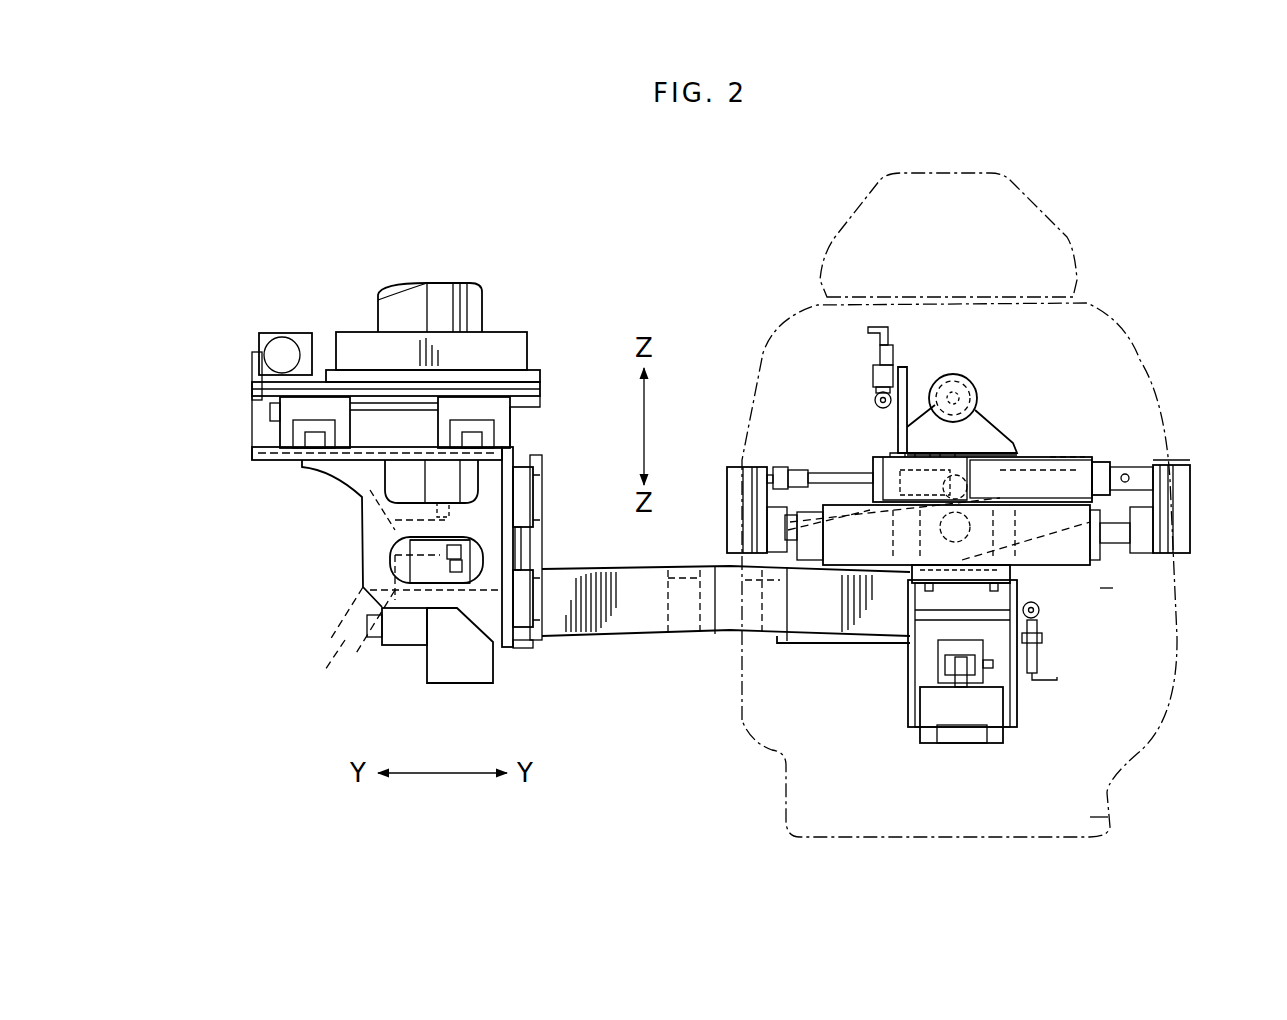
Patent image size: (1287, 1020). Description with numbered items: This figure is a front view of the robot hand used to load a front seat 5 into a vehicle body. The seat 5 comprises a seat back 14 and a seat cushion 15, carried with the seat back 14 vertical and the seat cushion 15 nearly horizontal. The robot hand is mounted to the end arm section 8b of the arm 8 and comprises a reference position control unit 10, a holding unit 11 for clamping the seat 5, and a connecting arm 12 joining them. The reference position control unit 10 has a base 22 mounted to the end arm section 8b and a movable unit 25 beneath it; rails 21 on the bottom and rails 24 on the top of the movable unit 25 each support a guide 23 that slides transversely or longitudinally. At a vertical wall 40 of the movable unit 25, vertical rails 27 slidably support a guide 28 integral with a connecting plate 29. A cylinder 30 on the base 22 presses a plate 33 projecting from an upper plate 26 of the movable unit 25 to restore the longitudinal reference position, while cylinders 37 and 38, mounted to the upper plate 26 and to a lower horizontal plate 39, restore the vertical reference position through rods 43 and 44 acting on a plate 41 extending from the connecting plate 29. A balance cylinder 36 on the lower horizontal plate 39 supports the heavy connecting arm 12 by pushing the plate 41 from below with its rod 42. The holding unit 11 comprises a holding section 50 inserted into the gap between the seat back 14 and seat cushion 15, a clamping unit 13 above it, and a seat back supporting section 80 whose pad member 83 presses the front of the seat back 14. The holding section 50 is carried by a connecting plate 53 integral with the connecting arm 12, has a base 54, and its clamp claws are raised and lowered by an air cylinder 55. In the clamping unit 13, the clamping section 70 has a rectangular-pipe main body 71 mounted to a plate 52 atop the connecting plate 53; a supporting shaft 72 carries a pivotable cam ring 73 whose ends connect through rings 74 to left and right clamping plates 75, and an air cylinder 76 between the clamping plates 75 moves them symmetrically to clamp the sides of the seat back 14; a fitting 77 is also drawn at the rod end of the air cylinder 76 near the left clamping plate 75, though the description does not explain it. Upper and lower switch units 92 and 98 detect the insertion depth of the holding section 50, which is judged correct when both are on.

The front seat 5 is at (1100, 330).
The arm 8 is at (466, 262).
The end arm section 8b is at (482, 303).
The reference position control unit 10 is at (364, 578).
The holding unit 11 is at (1115, 588).
The connecting arm 12 is at (748, 645).
The clamping unit 13 is at (1190, 455).
The seat back 14 is at (1130, 370).
The seat cushion 15 is at (1110, 815).
The rails 21 is at (541, 378).
The base 22 is at (535, 352).
The guide 23 is at (340, 432).
The rails 24 is at (505, 440).
The movable unit 25 is at (358, 516).
The upper plate 26 is at (270, 460).
The rails 27 is at (515, 647).
The guide 28 is at (540, 495).
The connecting plate 29 is at (540, 528).
The cylinder 30 is at (290, 335).
The plate 33 is at (263, 425).
The balance cylinder 36 is at (460, 677).
The cylinder 37 is at (447, 480).
The cylinder 38 is at (400, 643).
The lower horizontal plate 39 is at (363, 597).
The vertical wall 40 is at (507, 648).
The plate 41 is at (393, 524).
The rod 42 is at (545, 560).
The rod 43 is at (545, 550).
The rod 44 is at (365, 628).
The holding section 50 is at (967, 698).
The plate 52 is at (953, 585).
The connecting plate 53 is at (910, 677).
The base 54 is at (1000, 737).
The air cylinder 55 is at (970, 649).
The clamping section 70 is at (976, 517).
The main body 71 is at (843, 555).
The supporting shaft 72 is at (990, 470).
The cam ring 73 is at (1010, 500).
The ring 74 is at (840, 505).
The clamping plates 75 is at (727, 493).
The air cylinder 76 is at (1082, 457).
The rod fitting 77 is at (820, 473).
The seat back supporting section 80 is at (976, 379).
The pad member 83 is at (937, 387).
The upper switch unit 92 is at (870, 398).
The lower switch unit 98 is at (1047, 616).